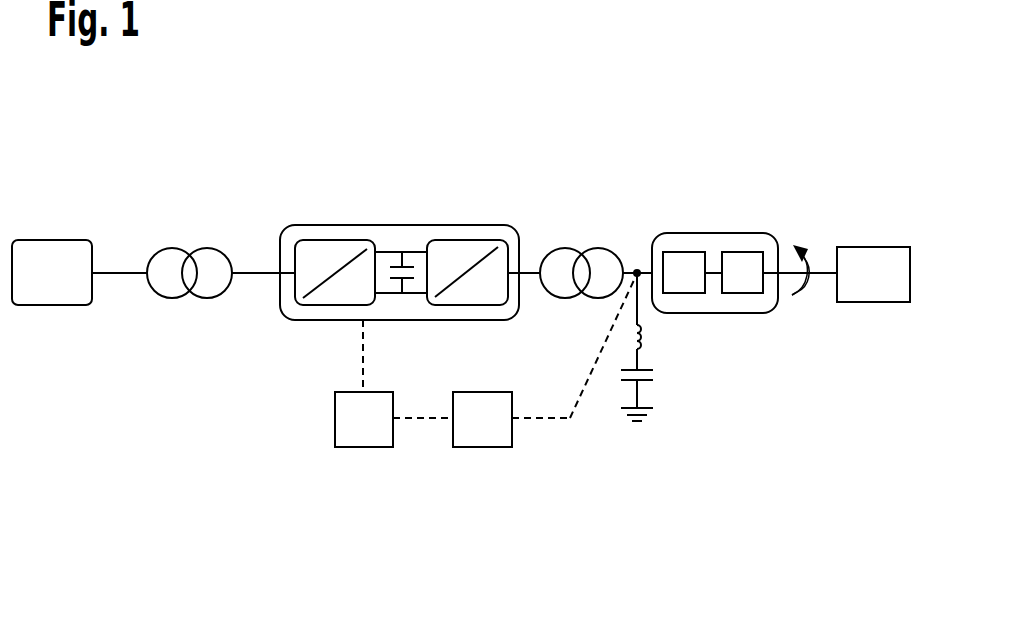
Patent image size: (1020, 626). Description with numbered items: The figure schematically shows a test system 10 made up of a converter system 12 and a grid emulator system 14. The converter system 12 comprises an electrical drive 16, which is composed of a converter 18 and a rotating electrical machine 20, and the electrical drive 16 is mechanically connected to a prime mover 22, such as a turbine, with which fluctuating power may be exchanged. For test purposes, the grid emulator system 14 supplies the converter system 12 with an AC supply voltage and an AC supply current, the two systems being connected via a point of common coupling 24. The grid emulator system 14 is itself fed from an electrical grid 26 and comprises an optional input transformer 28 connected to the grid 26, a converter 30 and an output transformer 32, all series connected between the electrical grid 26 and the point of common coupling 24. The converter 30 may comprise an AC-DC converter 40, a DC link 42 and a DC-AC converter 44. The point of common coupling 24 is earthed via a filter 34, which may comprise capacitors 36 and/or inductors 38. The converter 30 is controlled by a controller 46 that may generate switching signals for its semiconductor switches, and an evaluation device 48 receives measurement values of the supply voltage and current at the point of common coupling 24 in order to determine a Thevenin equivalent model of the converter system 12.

The test system 10 is at (208, 421).
The converter system 12 is at (810, 208).
The grid emulator system 14 is at (306, 194).
The electrical drive 16 is at (715, 267).
The converter 18 is at (690, 293).
The rotating electrical machine 20 is at (747, 293).
The prime mover 22 is at (875, 247).
The point of common coupling 24 is at (636, 270).
The electrical grid 26 is at (53, 240).
The input transformer 28 is at (175, 248).
The converter 30 is at (318, 321).
The output transformer 32 is at (568, 248).
The filter 34 is at (651, 380).
The capacitors 36 is at (646, 382).
The inductors 38 is at (645, 338).
The AC-DC converter 40 is at (343, 240).
The DC link 42 is at (403, 240).
The DC-AC converter 44 is at (478, 240).
The controller 46 is at (362, 447).
The evaluation device 48 is at (482, 447).